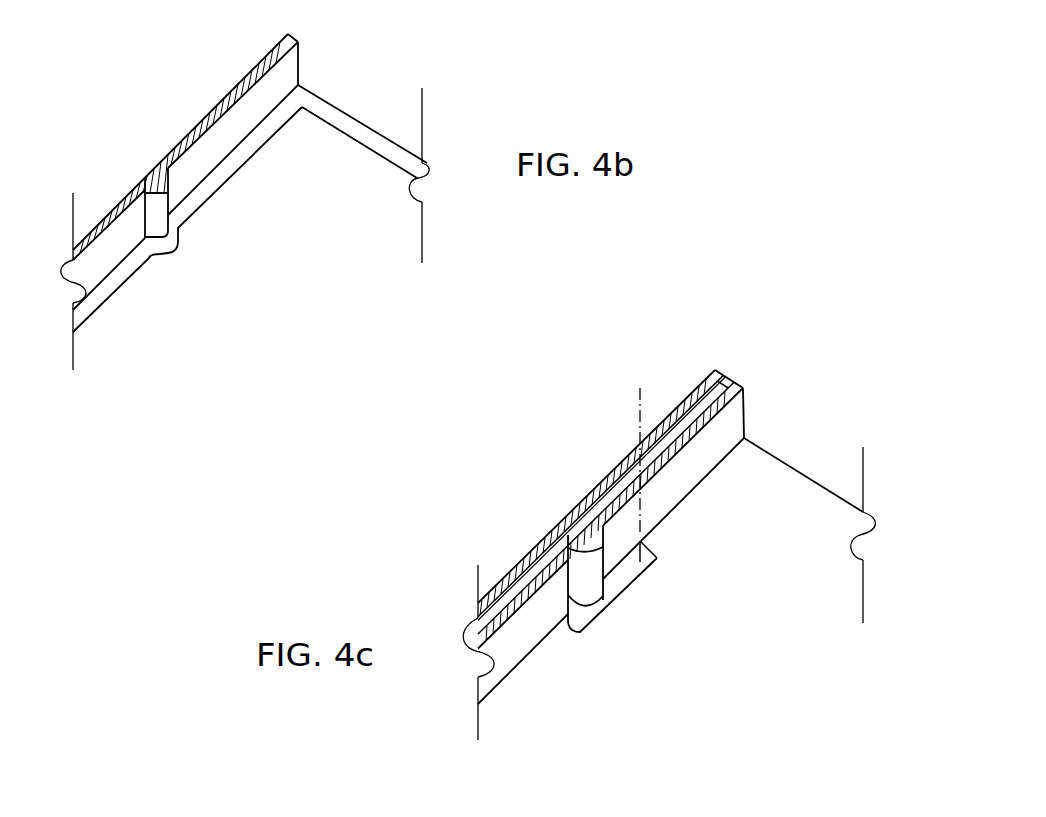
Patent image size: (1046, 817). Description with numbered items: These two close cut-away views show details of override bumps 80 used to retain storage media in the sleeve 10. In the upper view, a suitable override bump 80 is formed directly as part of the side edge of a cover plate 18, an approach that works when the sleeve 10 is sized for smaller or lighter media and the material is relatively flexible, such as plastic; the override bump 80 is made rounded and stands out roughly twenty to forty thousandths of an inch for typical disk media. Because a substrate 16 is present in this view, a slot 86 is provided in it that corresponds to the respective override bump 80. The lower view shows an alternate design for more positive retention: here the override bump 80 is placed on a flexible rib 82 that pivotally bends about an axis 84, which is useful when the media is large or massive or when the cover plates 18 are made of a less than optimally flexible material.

In FIG. 4B, the sleeve 10 is at (299, 40).
In FIG. 4C, the sleeve 10 is at (744, 408).
In FIG. 4B, the substrate 16 is at (289, 164).
In FIG. 4B, the cover plate 18 is at (319, 98).
In FIG. 4C, the cover plate 18 is at (759, 498).
In FIG. 4B, the override bump 80 is at (155, 181).
In FIG. 4C, the override bump 80 is at (587, 547).
In FIG. 4C, the flexible rib 82 is at (607, 507).
In FIG. 4C, the axis 84 is at (640, 413).
In FIG. 4B, the slot 86 is at (177, 244).